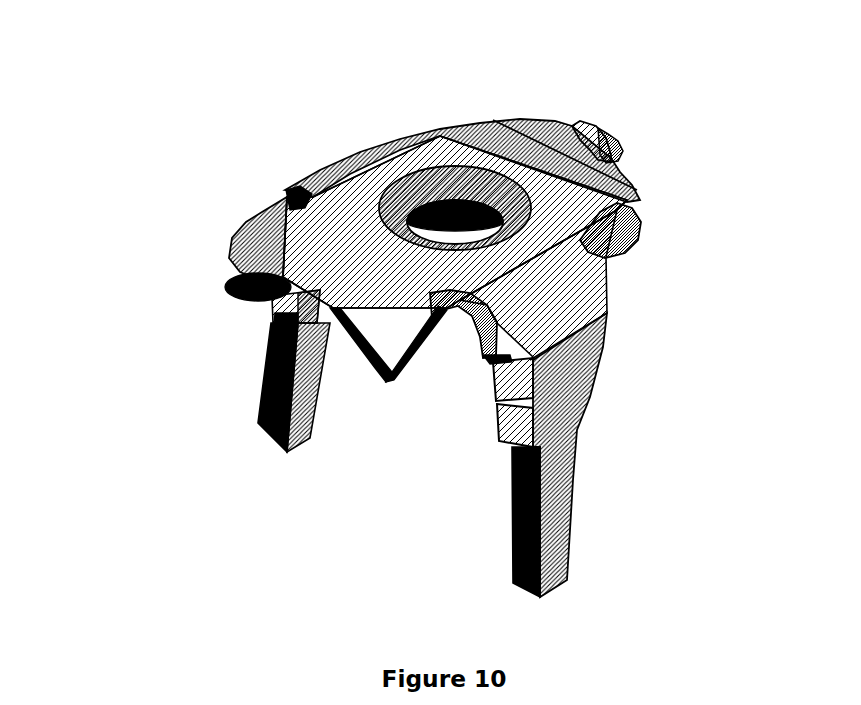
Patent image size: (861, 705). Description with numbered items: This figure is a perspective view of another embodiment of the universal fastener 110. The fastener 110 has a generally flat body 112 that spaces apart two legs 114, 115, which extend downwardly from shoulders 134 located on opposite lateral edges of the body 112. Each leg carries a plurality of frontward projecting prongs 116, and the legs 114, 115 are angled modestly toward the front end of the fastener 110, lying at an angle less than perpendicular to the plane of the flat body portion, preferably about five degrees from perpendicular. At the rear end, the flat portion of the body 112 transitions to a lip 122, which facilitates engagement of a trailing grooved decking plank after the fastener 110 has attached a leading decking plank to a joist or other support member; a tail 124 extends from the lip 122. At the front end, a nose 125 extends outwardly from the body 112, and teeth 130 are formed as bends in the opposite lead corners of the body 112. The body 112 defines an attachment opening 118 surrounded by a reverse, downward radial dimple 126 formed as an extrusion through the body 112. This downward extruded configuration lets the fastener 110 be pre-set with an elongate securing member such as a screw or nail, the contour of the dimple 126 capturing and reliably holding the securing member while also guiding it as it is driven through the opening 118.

The universal fastener 110 is at (632, 338).
The body 112 is at (343, 250).
The leg 114 is at (557, 527).
The leg 115 is at (265, 418).
The prongs 116 is at (497, 388).
The attachment opening 118 is at (440, 213).
The lip 122 is at (597, 197).
The tail 124 is at (598, 130).
The nose 125 is at (277, 318).
The reverse radial dimple 126 is at (413, 198).
The teeth 130 is at (256, 251).
The shoulders 134 is at (480, 312).